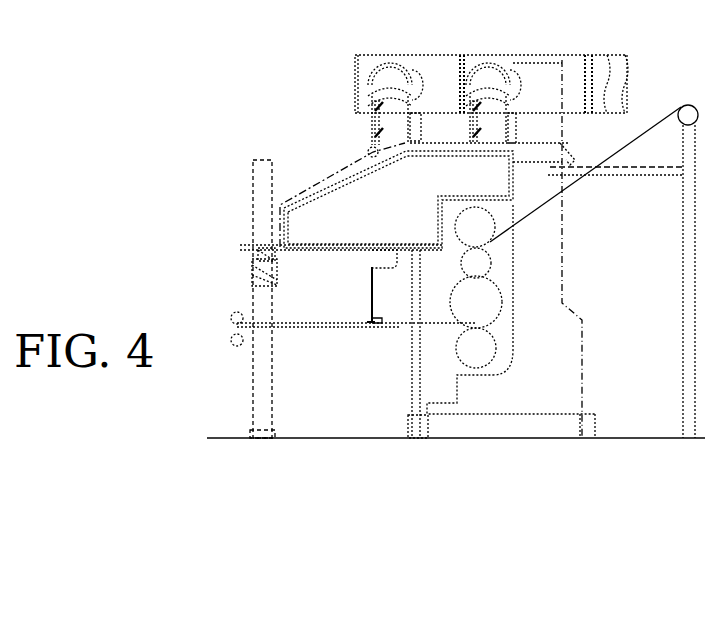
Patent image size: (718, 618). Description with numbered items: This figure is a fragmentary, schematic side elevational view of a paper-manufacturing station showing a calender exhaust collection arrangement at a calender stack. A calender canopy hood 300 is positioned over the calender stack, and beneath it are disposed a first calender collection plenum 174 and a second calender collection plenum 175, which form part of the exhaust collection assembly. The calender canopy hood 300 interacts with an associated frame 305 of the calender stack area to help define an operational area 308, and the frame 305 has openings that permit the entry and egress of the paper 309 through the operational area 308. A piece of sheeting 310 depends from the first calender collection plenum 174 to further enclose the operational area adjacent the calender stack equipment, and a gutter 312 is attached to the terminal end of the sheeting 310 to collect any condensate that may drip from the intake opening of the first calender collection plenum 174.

The first calender collection plenum 174 is at (372, 259).
The second calender collection plenum 175 is at (502, 203).
The calender canopy hood 300 is at (362, 168).
The frame 305 is at (255, 393).
The operational area 308 is at (400, 302).
The paper 309 is at (306, 330).
The sheeting 310 is at (372, 296).
The gutter 312 is at (367, 323).